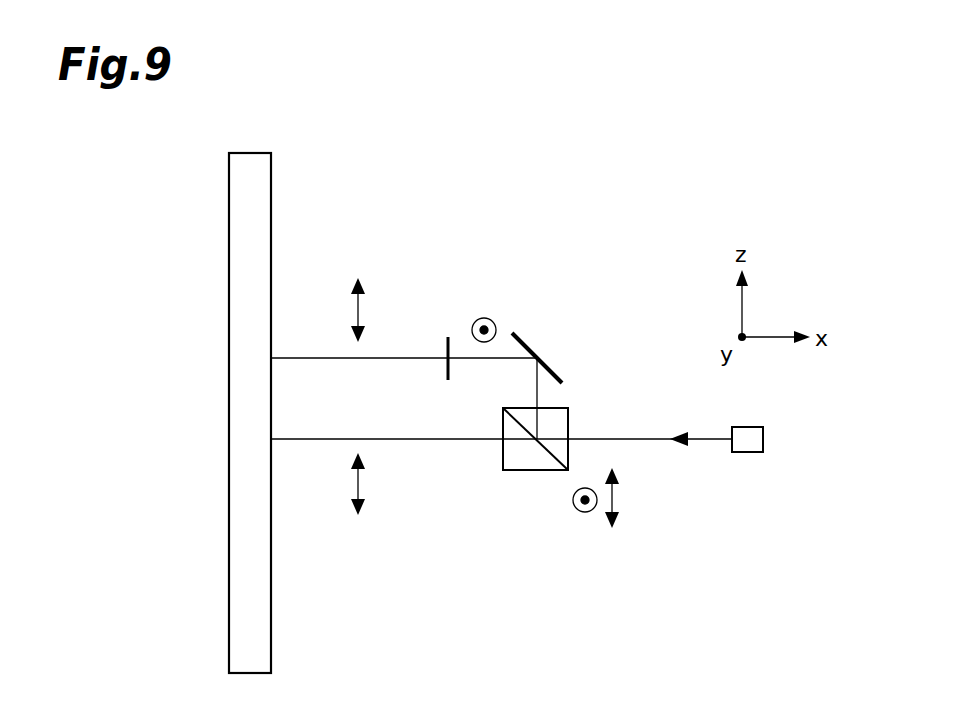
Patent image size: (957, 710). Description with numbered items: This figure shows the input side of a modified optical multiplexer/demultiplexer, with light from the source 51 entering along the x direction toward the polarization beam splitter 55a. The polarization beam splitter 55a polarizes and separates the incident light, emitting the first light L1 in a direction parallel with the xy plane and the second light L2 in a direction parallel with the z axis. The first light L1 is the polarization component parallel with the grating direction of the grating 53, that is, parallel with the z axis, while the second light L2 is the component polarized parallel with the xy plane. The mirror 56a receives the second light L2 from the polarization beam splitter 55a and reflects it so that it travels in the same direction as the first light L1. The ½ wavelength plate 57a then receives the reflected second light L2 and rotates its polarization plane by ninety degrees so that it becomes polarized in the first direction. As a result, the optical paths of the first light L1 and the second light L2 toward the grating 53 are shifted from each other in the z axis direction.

The light source 51 is at (763, 437).
The grating 53 is at (229, 598).
The polarization beam splitter 55a is at (528, 471).
The mirror 56a is at (524, 338).
The ½ wavelength plate 57a is at (450, 339).
The first light L1 is at (413, 441).
The second light L2 is at (414, 356).